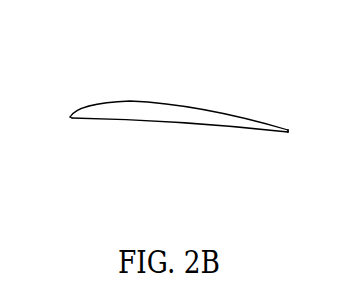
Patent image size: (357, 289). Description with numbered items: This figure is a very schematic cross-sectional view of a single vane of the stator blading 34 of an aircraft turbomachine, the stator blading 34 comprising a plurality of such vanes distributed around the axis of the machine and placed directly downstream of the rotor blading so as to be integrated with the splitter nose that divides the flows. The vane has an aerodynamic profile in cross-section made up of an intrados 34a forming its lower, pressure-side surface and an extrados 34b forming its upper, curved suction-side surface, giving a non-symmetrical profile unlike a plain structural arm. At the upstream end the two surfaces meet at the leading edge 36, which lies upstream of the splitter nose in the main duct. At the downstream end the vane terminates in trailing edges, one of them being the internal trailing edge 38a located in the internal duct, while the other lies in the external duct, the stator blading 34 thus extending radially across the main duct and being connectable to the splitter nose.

The stator blading 34 is at (181, 116).
The intrados 34a is at (175, 121).
The extrados 34b is at (155, 101).
The leading edge 36 is at (71, 117).
The internal trailing edge 38a is at (288, 131).